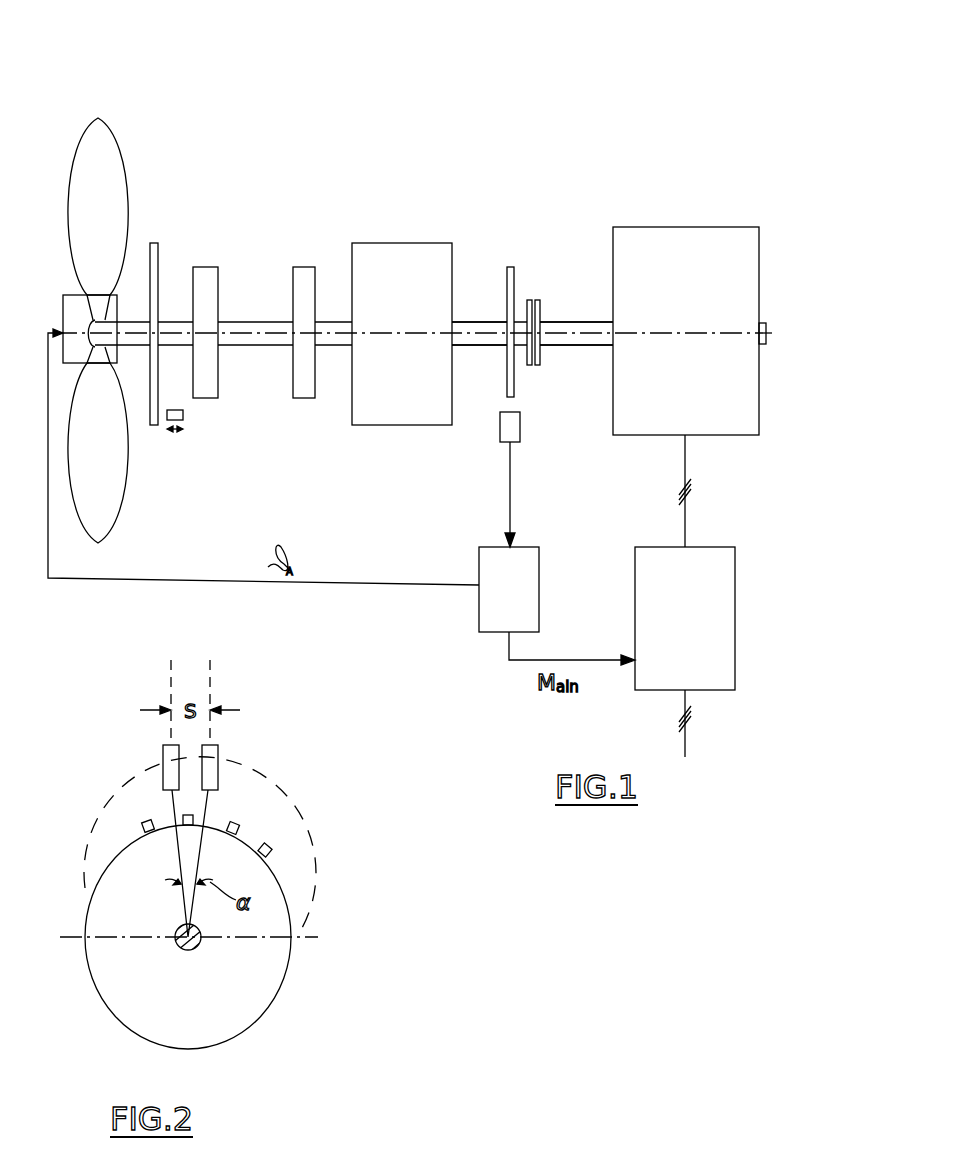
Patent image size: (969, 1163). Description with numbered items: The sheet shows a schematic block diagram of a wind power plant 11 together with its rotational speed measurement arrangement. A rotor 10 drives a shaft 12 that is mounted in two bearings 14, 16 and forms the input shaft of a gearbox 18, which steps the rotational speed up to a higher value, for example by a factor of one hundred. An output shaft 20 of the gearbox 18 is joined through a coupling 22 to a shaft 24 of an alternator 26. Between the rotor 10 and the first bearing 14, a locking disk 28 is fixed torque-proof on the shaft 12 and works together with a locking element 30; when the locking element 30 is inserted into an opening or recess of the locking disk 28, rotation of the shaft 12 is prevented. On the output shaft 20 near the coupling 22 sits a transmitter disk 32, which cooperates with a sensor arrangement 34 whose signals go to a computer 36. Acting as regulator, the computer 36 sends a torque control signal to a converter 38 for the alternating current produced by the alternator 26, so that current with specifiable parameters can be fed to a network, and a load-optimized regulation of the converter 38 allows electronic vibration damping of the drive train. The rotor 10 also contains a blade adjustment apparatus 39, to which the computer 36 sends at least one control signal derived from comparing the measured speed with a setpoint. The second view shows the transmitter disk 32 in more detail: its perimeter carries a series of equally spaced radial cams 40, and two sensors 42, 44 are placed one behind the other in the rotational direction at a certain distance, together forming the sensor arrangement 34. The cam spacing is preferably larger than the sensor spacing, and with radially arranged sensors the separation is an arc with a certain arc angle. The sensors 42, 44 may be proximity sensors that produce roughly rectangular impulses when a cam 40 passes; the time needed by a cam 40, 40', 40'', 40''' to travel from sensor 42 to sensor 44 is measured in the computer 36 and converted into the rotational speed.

In FIG. 1, the rotor 10 is at (117, 168).
In FIG. 1, the wind power plant 11 is at (420, 103).
In FIG. 1, the shaft 12 is at (250, 322).
In FIG. 1, the bearing 14 is at (204, 270).
In FIG. 1, the bearing 16 is at (304, 270).
In FIG. 1, the gearbox 18 is at (372, 255).
In FIG. 1, the output shaft 20 is at (474, 320).
In FIG. 2, the output shaft 20 is at (195, 948).
In FIG. 1, the coupling 22 is at (532, 300).
In FIG. 1, the shaft 24 is at (565, 322).
In FIG. 1, the alternator 26 is at (678, 238).
In FIG. 1, the locking disk 28 is at (158, 428).
In FIG. 1, the locking element 30 is at (183, 414).
In FIG. 1, the transmitter disk 32 is at (510, 267).
In FIG. 2, the transmitter disk 32 is at (283, 917).
In FIG. 1, the sensor arrangement 34 is at (520, 428).
In FIG. 1, the computer 36 is at (528, 555).
In FIG. 1, the converter 38 is at (720, 592).
In FIG. 1, the blade adjustment apparatus 39 is at (70, 295).
In FIG. 2, the radial cams 40 is at (127, 814).
In FIG. 2, the cam 40' is at (278, 773).
In FIG. 2, the cam 40'' is at (270, 803).
In FIG. 2, the cam 40''' is at (317, 834).
In FIG. 2, the sensor 42 is at (195, 725).
In FIG. 2, the sensor 44 is at (210, 745).